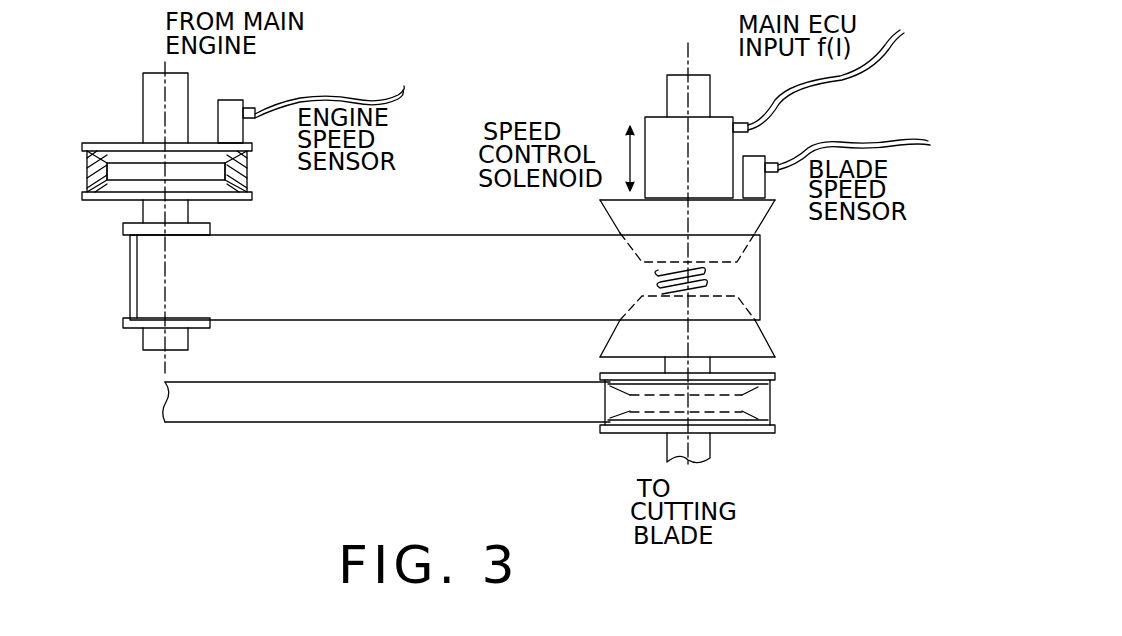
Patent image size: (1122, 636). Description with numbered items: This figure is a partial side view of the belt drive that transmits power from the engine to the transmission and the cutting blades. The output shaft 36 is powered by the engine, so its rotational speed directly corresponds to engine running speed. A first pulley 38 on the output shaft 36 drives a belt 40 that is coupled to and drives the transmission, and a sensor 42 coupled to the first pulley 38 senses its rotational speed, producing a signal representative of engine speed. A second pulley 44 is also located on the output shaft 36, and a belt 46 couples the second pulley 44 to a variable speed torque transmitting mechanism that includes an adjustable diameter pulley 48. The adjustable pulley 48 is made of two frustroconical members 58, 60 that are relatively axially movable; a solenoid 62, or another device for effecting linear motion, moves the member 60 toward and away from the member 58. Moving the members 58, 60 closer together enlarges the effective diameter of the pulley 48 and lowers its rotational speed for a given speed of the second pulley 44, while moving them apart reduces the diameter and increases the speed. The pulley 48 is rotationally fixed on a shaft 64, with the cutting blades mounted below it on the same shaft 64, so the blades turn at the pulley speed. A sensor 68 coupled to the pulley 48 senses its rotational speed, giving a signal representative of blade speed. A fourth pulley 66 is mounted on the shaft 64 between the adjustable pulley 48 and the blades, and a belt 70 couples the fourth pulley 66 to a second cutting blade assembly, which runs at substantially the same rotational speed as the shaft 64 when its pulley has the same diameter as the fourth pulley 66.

The output shaft 36 is at (152, 90).
The first pulley 38 is at (123, 142).
The belt 40 is at (247, 175).
The sensor 42 is at (236, 100).
The second pulley 44 is at (130, 330).
The belt 46 is at (400, 233).
The adjustable diameter pulley 48 is at (746, 286).
The frustroconical member 58 is at (765, 345).
The frustroconical member 60 is at (765, 222).
The solenoid 62 is at (657, 130).
The shaft 64 is at (715, 452).
The fourth pulley 66 is at (780, 376).
The sensor 68 is at (763, 156).
The belt 70 is at (512, 418).